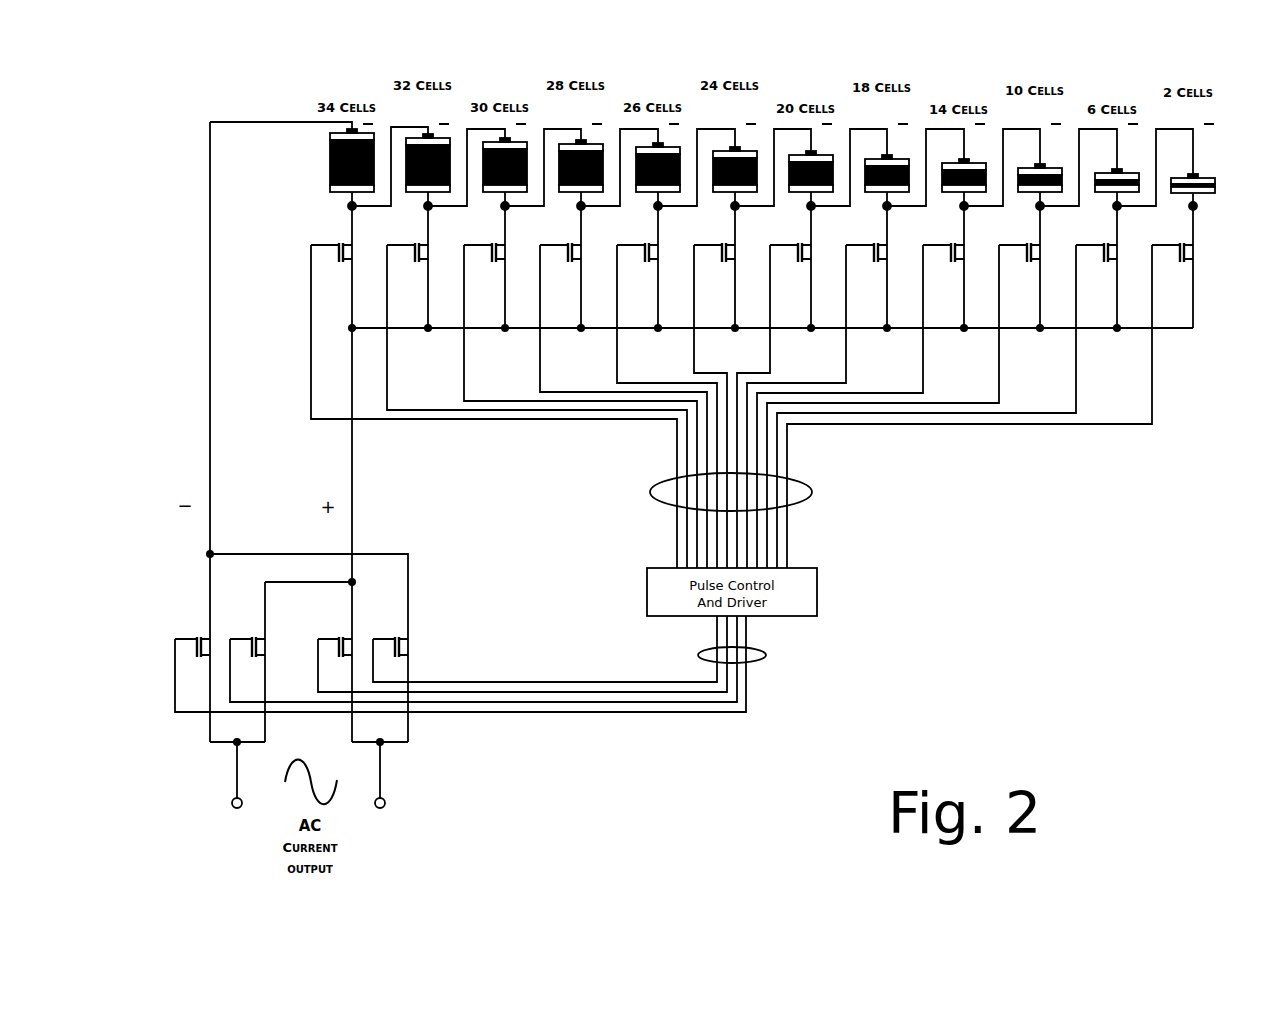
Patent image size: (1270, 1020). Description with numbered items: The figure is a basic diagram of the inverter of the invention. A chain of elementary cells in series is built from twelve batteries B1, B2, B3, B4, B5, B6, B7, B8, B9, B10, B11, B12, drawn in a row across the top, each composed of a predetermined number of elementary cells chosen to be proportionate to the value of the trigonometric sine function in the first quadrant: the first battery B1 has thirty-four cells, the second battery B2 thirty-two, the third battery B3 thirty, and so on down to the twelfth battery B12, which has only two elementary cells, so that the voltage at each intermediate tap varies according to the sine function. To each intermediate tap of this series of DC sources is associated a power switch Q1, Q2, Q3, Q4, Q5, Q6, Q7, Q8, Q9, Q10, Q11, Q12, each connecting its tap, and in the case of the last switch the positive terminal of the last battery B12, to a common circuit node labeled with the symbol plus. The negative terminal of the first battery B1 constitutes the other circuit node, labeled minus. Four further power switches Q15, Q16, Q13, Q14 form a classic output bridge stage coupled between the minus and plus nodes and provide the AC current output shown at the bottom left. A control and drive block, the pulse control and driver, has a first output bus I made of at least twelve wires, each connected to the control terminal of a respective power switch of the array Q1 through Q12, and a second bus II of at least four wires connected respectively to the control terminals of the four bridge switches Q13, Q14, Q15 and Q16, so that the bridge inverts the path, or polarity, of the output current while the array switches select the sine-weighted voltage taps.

The first battery B1 is at (293, 225).
The second battery B2 is at (402, 226).
The third battery B3 is at (478, 226).
The fourth battery B4 is at (555, 226).
The fifth battery B5 is at (631, 226).
The sixth battery B6 is at (708, 226).
The seventh battery B7 is at (785, 226).
The eighth battery B8 is at (861, 226).
The ninth battery B9 is at (937, 226).
The tenth battery B10 is at (1014, 226).
The eleventh battery B11 is at (1090, 226).
The twelfth battery B12 is at (1167, 226).
The power switch Q1 is at (494, 396).
The power switch Q2 is at (537, 396).
The power switch Q3 is at (580, 396).
The power switch Q4 is at (623, 396).
The power switch Q5 is at (667, 396).
The power switch Q6 is at (714, 396).
The power switch Q7 is at (774, 396).
The power switch Q8 is at (817, 396).
The power switch Q9 is at (860, 396).
The power switch Q10 is at (903, 396).
The power switch Q11 is at (947, 396).
The power switch Q12 is at (990, 396).
The output bridge power switch Q13 is at (521, 652).
The output bridge power switch Q14 is at (544, 647).
The output bridge power switch Q15 is at (459, 662).
The output bridge power switch Q16 is at (482, 657).
The first output bus I is at (745, 492).
The second bus II is at (750, 656).